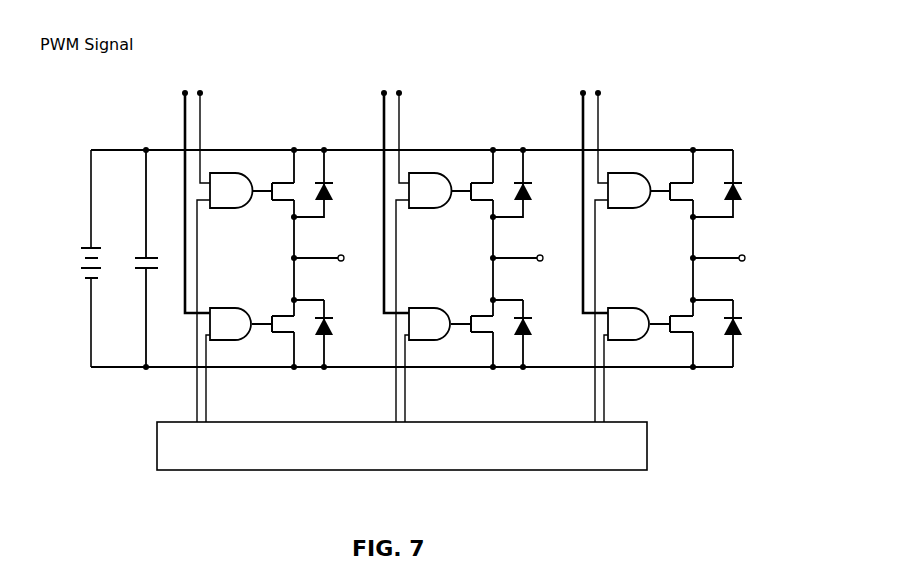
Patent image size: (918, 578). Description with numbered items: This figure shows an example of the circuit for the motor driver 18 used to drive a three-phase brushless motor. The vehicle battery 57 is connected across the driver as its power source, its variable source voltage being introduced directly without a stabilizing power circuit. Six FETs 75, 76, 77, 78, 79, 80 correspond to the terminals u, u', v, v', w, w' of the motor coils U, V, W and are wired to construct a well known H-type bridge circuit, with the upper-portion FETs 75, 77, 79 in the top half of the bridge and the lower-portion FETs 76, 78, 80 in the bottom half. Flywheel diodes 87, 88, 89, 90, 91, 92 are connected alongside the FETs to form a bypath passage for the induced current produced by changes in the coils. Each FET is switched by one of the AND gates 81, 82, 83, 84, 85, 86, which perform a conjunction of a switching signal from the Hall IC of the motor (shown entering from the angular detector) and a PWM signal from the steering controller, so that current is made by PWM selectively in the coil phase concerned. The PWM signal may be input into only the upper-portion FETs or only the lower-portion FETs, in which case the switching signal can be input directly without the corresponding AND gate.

The motor driver 18 is at (518, 73).
The vehicle battery 57 is at (88, 246).
The FET 75 is at (288, 181).
The FET 76 is at (282, 340).
The FET 77 is at (487, 181).
The FET 78 is at (481, 340).
The FET 79 is at (688, 181).
The FET 80 is at (681, 340).
The AND gate 81 is at (223, 209).
The AND gate 82 is at (220, 307).
The AND gate 83 is at (432, 209).
The AND gate 84 is at (419, 307).
The AND gate 85 is at (626, 174).
The AND gate 86 is at (622, 307).
The flywheel diode 87 is at (327, 191).
The flywheel diode 88 is at (330, 330).
The flywheel diode 89 is at (526, 191).
The flywheel diode 90 is at (530, 330).
The flywheel diode 91 is at (740, 190).
The flywheel diode 92 is at (740, 330).